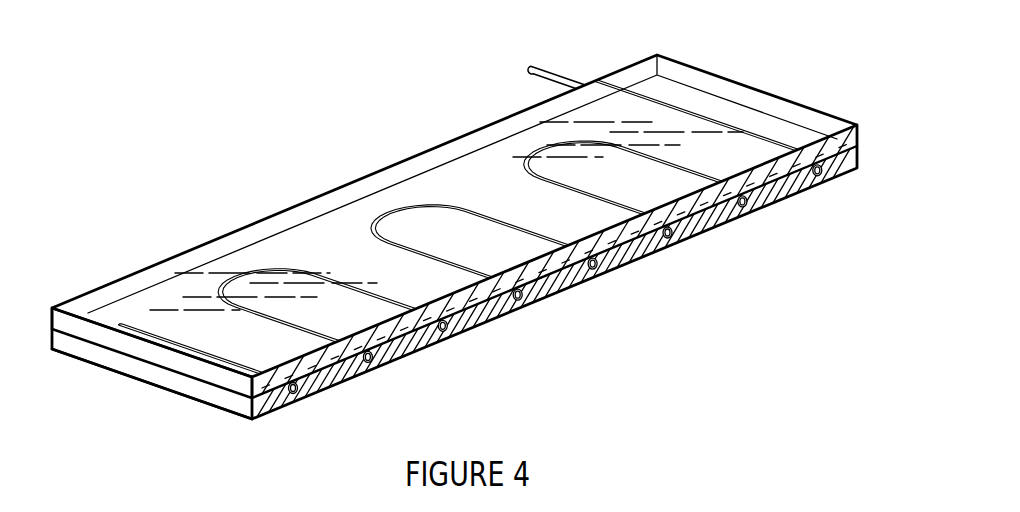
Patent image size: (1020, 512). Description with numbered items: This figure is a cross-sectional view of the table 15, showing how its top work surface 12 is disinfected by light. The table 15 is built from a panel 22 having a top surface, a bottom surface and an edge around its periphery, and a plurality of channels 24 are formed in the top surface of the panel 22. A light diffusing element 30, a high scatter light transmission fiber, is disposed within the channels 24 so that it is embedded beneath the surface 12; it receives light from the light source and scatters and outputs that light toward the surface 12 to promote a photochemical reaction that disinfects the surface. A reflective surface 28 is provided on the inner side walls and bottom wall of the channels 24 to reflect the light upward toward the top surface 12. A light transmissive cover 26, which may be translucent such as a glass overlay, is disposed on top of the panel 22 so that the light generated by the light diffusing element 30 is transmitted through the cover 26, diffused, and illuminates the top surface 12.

The surface 12 is at (480, 172).
The table 15 is at (200, 238).
The panel 22 is at (188, 384).
The channel 24 is at (322, 377).
The light transmissive cover 26 is at (244, 382).
The reflective surface 28 is at (310, 387).
The light diffusing element 30 is at (557, 66).